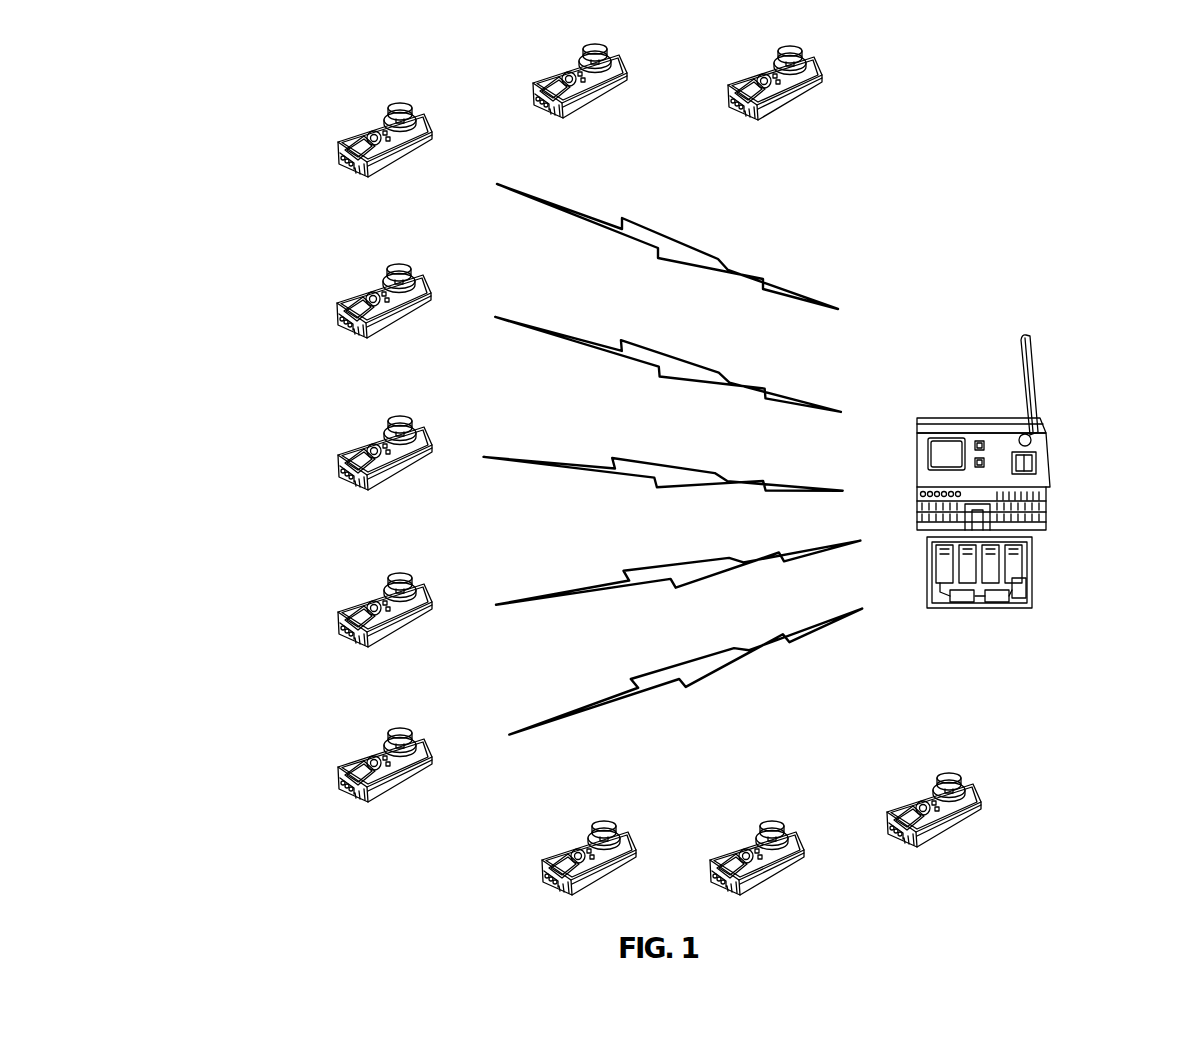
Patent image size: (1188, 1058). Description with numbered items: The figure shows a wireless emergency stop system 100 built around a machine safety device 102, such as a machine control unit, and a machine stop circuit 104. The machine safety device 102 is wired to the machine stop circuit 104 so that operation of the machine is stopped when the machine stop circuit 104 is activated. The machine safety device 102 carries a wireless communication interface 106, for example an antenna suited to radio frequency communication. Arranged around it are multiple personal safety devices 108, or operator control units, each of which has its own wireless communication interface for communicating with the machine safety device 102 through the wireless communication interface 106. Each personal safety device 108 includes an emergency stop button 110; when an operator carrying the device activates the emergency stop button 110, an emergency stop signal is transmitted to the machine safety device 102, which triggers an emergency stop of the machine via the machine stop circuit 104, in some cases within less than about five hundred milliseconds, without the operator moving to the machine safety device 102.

The wireless emergency stop system 100 is at (254, 88).
The machine safety device 102 is at (1043, 449).
The machine stop circuit 104 is at (1032, 578).
The wireless communication interface 106 is at (1032, 352).
The personal safety device 108 is at (826, 81).
The emergency stop button 110 is at (401, 263).